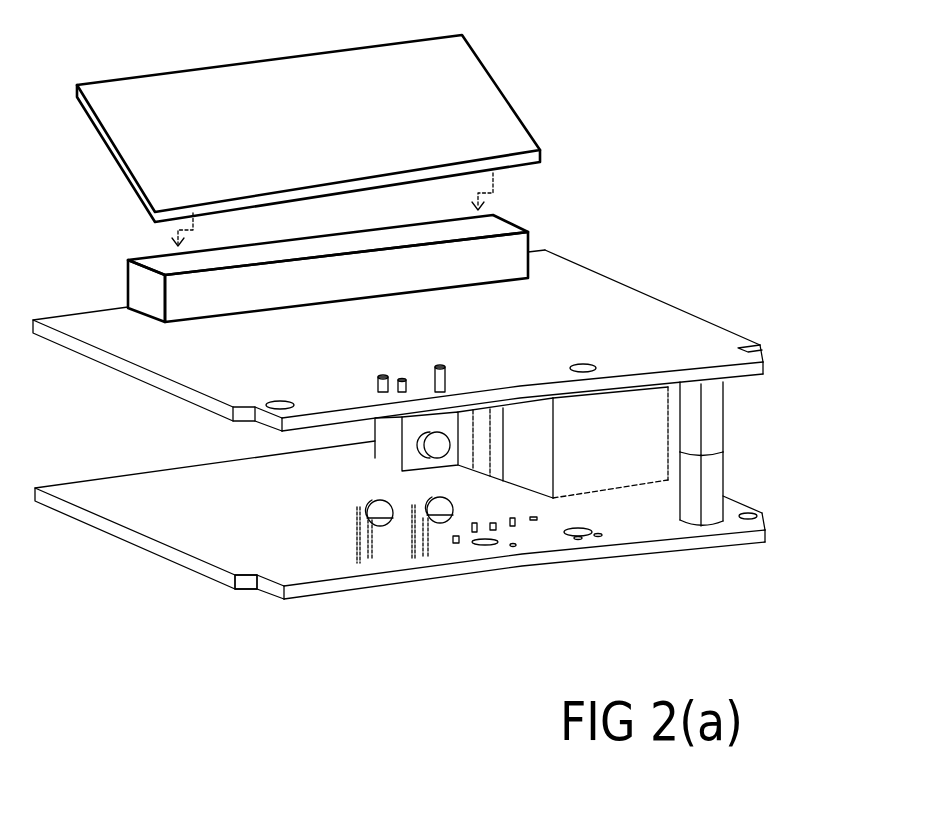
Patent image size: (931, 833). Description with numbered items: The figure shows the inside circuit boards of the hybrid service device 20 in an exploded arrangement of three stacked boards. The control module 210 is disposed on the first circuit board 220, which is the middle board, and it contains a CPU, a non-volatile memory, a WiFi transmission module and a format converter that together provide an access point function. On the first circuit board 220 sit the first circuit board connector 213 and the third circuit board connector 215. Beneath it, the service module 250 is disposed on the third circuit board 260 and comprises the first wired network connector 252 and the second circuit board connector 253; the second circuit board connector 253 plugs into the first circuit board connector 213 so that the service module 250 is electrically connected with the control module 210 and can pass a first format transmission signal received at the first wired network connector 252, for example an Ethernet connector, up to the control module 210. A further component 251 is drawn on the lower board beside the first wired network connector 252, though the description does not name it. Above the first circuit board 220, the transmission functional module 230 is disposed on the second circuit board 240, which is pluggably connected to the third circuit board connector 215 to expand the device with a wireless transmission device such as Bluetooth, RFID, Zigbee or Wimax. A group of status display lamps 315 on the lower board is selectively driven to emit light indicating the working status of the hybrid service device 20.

The hybrid service device 20 is at (665, 124).
The control module 210 is at (685, 258).
The first circuit board connector 213 is at (723, 418).
The third circuit board connector 215 is at (143, 256).
The first circuit board 220 is at (752, 345).
The transmission functional module 230 is at (524, 125).
The second circuit board 240 is at (508, 58).
The service module 250 is at (153, 580).
The sensor block with lens 251 is at (453, 462).
The first wired network connector 252 is at (612, 462).
The second circuit board connector 253 is at (723, 467).
The third circuit board 260 is at (250, 585).
The status display lamps 315 is at (442, 522).